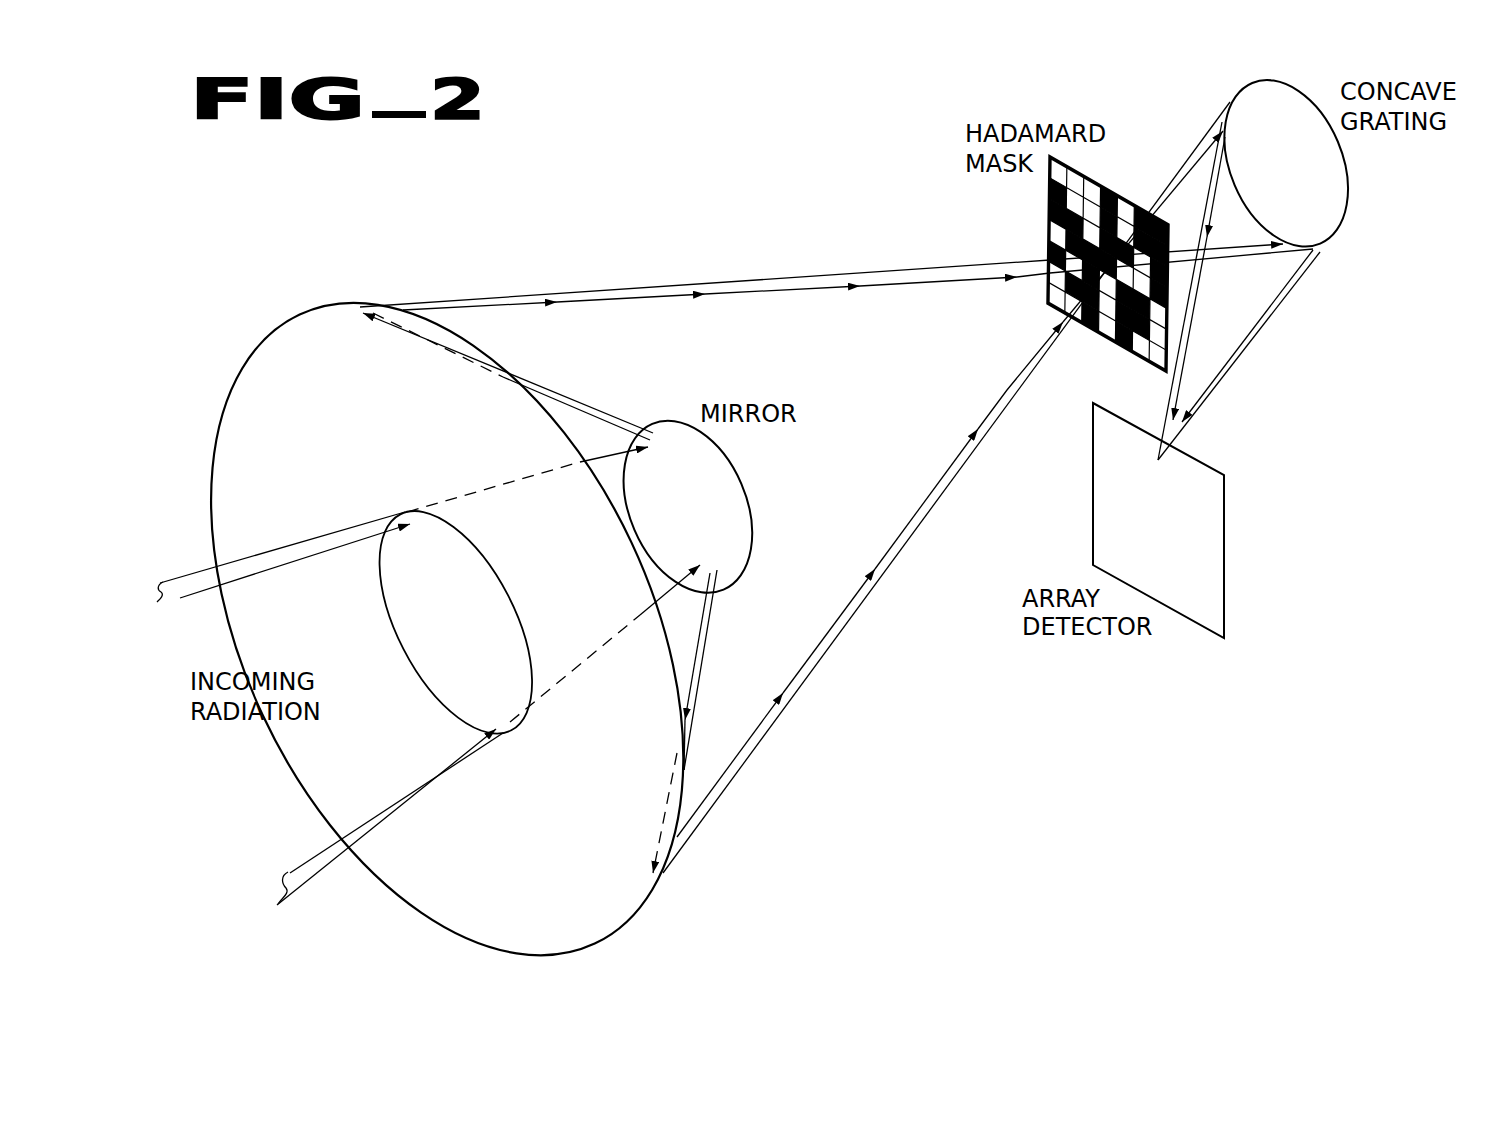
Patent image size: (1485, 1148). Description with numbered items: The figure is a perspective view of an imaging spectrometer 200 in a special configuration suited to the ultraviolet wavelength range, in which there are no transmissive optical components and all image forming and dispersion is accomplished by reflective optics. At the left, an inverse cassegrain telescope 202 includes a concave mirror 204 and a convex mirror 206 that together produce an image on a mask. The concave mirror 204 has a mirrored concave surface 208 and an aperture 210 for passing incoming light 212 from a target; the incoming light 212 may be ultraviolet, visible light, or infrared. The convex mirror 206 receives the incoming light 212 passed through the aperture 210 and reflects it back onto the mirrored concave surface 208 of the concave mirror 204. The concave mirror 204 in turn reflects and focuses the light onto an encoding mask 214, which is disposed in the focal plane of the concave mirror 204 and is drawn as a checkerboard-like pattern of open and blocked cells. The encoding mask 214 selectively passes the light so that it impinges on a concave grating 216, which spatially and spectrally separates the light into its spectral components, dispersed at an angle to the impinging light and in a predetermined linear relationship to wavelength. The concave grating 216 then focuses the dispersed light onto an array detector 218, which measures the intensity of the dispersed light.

The imaging spectrometer 200 is at (610, 259).
The inverse cassegrain telescope 202 is at (724, 657).
The concave mirror 204 is at (664, 871).
The convex mirror 206 is at (747, 498).
The mirrored concave surface 208 is at (463, 343).
The aperture 210 is at (428, 600).
The incoming light 212 is at (155, 598).
The encoding mask 214 is at (1113, 188).
The concave grating 216 is at (1336, 204).
The array detector 218 is at (1228, 578).